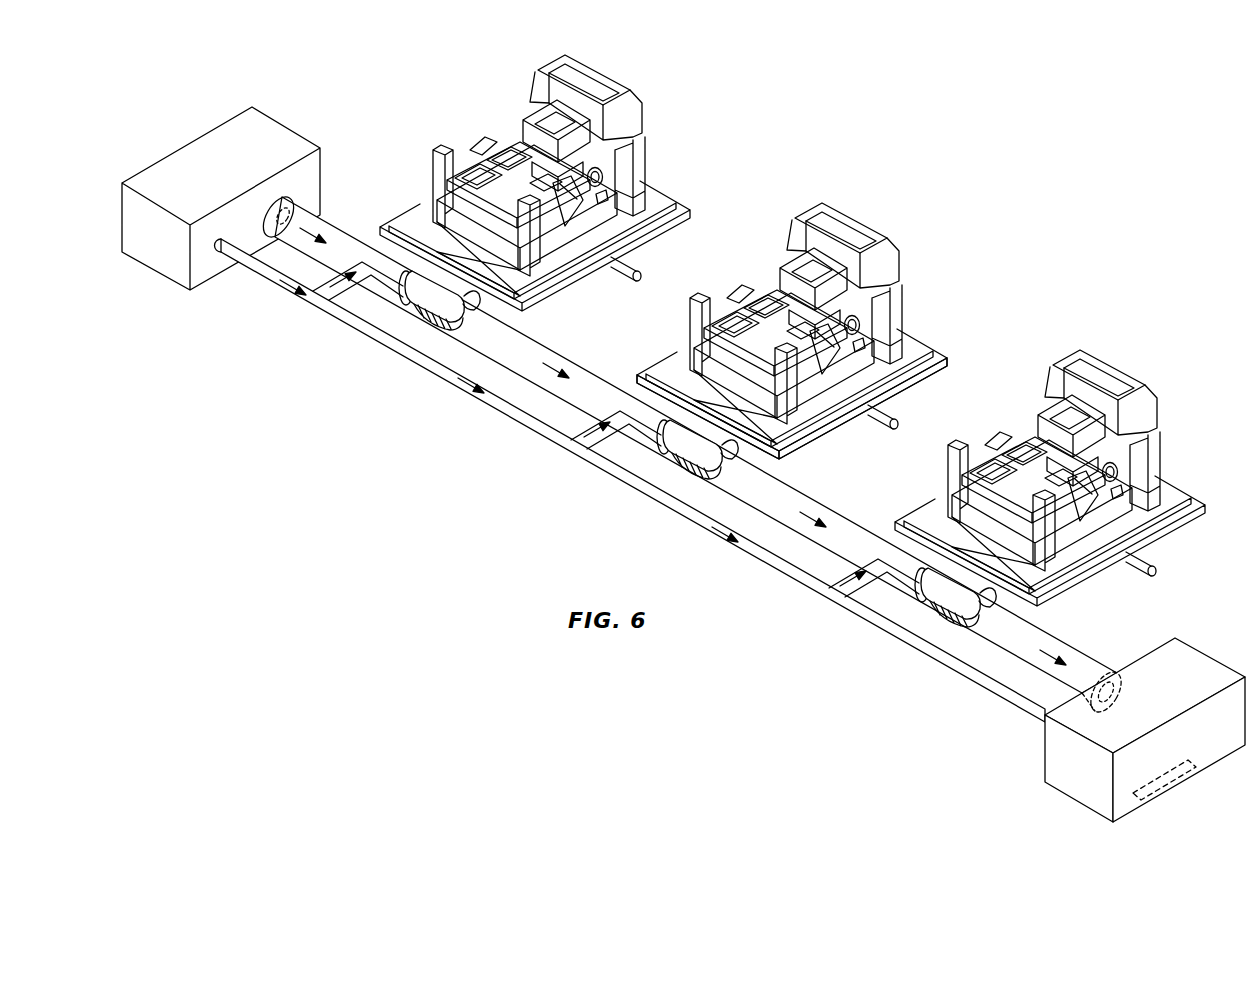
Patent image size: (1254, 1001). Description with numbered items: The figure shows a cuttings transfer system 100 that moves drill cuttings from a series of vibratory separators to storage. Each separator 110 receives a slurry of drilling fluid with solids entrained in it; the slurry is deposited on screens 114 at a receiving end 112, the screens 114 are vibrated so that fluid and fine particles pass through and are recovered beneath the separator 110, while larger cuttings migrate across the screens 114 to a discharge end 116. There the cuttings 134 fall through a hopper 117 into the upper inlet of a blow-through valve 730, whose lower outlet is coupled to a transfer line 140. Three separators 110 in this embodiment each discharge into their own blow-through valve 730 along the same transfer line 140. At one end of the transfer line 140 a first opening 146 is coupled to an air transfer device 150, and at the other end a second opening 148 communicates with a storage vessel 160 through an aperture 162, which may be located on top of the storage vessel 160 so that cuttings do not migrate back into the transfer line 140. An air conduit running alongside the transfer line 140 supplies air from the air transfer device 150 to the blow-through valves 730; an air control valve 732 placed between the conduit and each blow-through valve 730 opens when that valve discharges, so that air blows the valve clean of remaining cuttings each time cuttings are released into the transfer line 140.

The cuttings transfer system 100 is at (984, 166).
The separator 110 is at (552, 63).
The receiving end 112 is at (585, 83).
The screens 114 is at (532, 135).
The discharge end 116 is at (425, 218).
The hopper 117 is at (740, 402).
The cuttings 134 is at (1170, 780).
The transfer line 140 is at (1000, 640).
The first opening 146 is at (283, 218).
The second opening 148 is at (1130, 690).
The air transfer device 150 is at (205, 150).
The storage vessel 160 is at (1053, 748).
The aperture 162 is at (1106, 686).
The blow-through valve 730 is at (432, 300).
The air control valve 732 is at (393, 285).